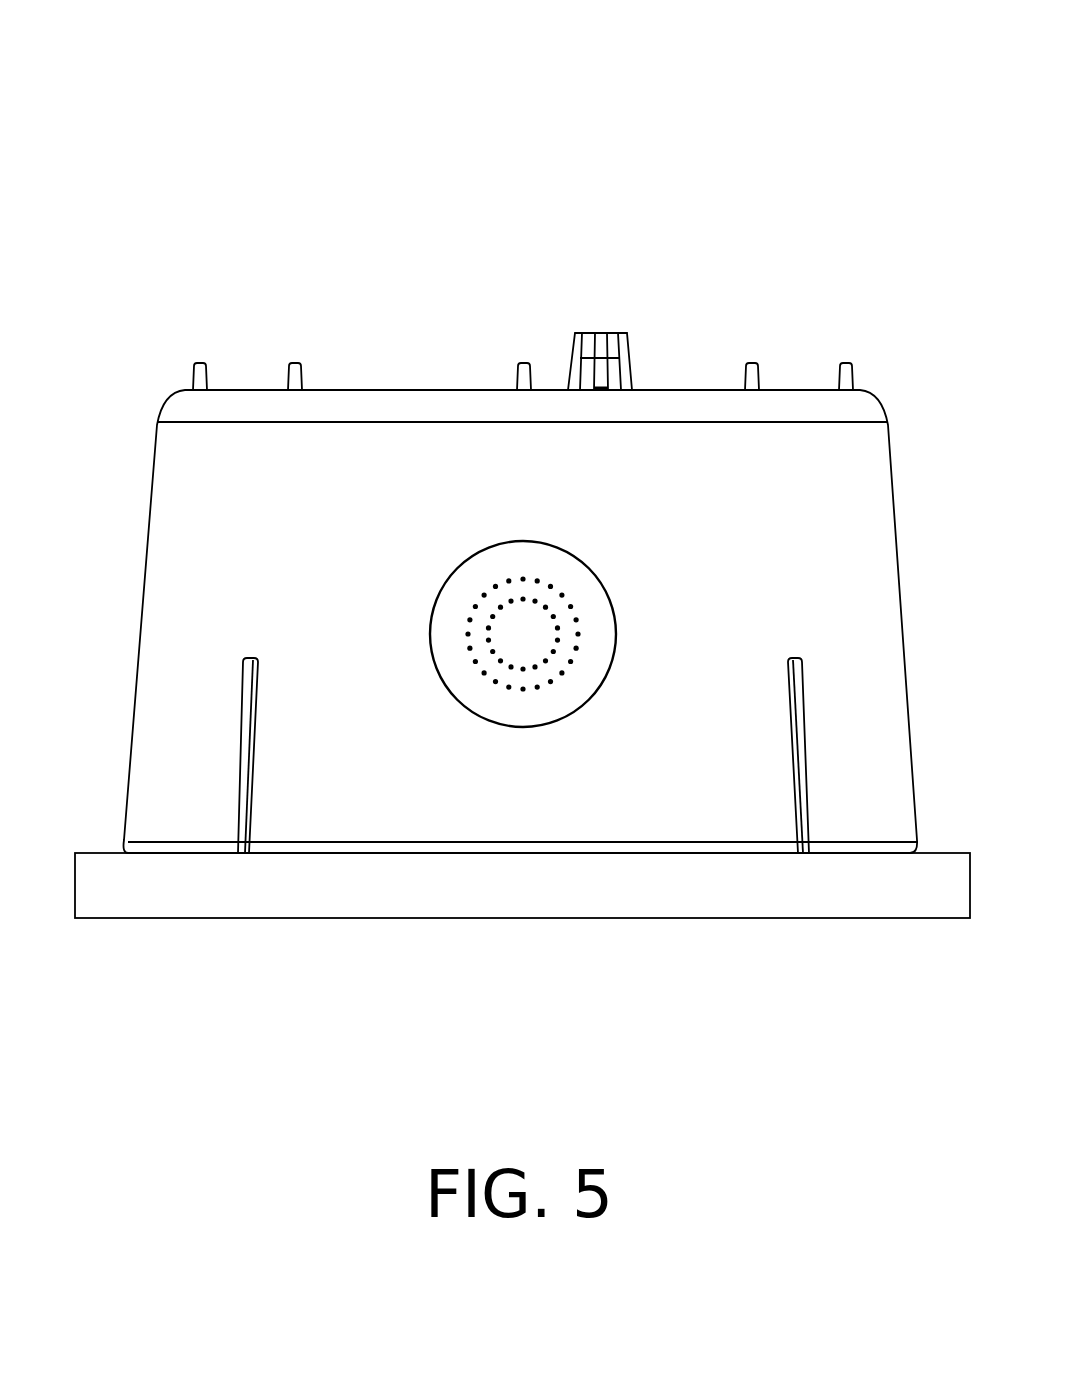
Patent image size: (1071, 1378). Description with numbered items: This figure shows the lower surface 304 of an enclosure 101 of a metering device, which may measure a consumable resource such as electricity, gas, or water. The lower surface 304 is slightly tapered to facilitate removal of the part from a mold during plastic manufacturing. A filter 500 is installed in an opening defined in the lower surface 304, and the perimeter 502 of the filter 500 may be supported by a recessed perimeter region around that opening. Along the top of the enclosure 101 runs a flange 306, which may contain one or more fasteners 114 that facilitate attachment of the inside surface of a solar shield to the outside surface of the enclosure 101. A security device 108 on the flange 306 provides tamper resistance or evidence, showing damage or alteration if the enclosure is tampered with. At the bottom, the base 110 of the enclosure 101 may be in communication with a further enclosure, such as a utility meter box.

The enclosure 101 is at (811, 100).
The security device 108 is at (585, 332).
The base 110 is at (598, 918).
The fasteners 114 is at (295, 362).
The lower surface 304 is at (510, 490).
The flange 306 is at (416, 410).
The filter 500 is at (517, 635).
The perimeter 502 is at (580, 557).